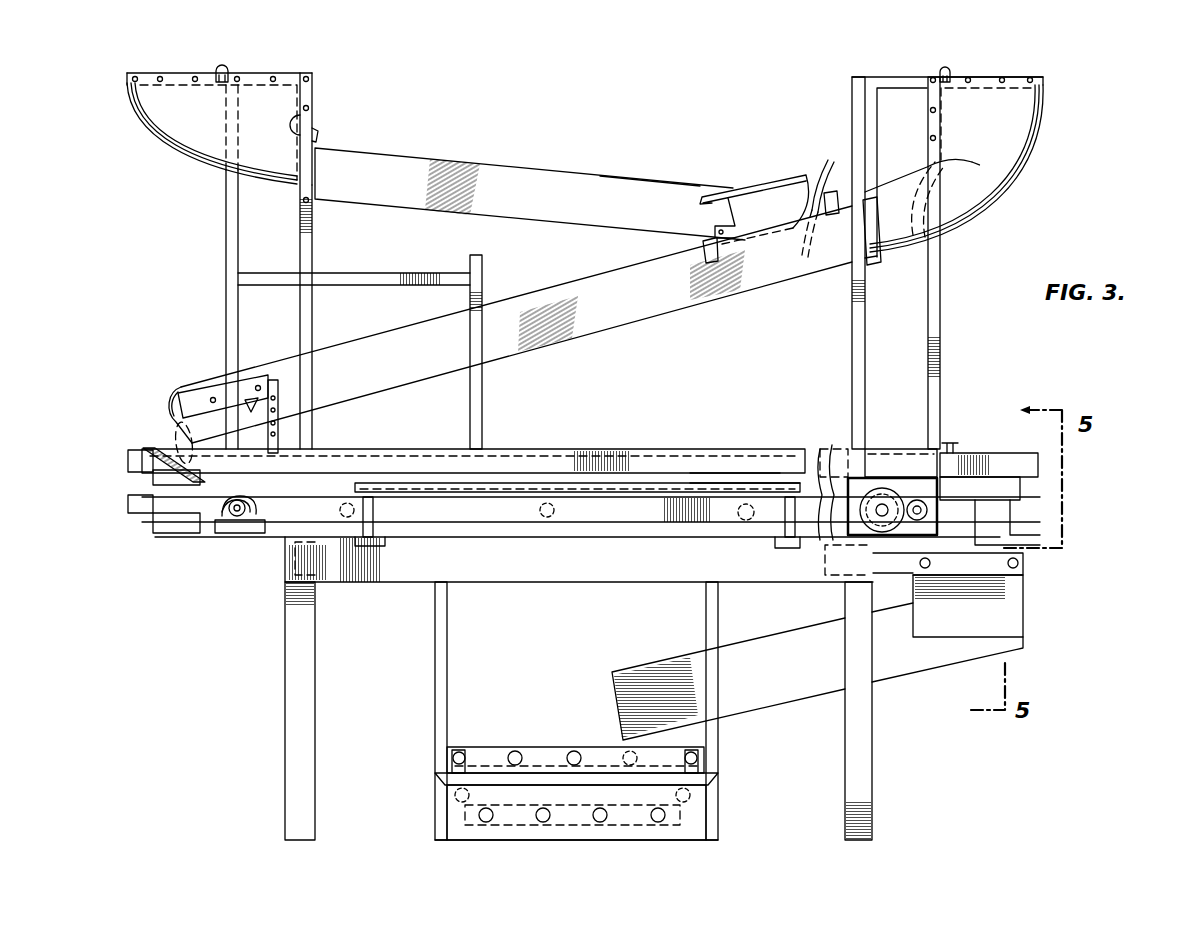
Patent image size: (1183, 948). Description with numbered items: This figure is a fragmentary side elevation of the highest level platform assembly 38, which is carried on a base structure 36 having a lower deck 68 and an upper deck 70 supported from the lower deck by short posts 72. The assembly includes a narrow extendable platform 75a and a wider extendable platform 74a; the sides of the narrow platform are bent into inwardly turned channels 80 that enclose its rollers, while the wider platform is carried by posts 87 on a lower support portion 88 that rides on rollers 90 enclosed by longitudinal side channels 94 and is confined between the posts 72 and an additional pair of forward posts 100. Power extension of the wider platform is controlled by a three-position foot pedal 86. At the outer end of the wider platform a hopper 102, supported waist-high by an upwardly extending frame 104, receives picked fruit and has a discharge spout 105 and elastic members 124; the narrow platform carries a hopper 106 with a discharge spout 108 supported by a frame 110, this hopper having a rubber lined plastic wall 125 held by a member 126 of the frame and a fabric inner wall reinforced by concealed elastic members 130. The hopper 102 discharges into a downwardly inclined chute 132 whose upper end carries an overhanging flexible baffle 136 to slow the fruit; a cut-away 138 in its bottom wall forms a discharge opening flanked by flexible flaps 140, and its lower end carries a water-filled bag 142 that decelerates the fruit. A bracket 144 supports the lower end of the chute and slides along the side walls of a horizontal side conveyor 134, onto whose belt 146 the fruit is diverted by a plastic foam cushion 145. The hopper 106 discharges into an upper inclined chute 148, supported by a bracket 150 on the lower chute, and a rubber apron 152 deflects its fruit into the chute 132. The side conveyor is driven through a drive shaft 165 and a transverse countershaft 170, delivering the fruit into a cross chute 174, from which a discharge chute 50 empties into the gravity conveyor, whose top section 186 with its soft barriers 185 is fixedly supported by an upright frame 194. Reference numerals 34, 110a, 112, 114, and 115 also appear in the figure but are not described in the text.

The legs 34 is at (293, 710).
The base structure 36 is at (536, 583).
The platform assembly 38 is at (680, 136).
The discharge chute 50 is at (817, 671).
The lower deck 68 is at (608, 578).
The upper deck 70 is at (757, 488).
The short posts 72 is at (372, 507).
The wider platform 74a is at (1032, 463).
The narrow platform 75a is at (710, 452).
The inwardly turned channels 80 is at (538, 463).
The three-position foot pedal 86 is at (955, 444).
The posts 87 is at (1030, 490).
The lower support portions 88 is at (828, 460).
The rollers 90 is at (548, 518).
The longitudinal side channels 94 is at (625, 512).
The forward posts 100 is at (990, 533).
The hopper 102 is at (1010, 108).
The upwardly extending frame 104 is at (935, 378).
The discharge spout 105 is at (893, 232).
The hopper 106 is at (178, 120).
The discharge spout 108 is at (318, 132).
The frame 110 is at (300, 228).
The cross brace post 110a is at (483, 292).
The bin lip 112 is at (1005, 158).
The rivet strip 114 is at (970, 77).
The top rail 115 is at (1018, 75).
The elastic members 124 is at (947, 70).
The rubber lined plastic wall 125 is at (201, 151).
The member 126 is at (262, 76).
The concealed elastic members 130 is at (224, 67).
The inclined chute 132 is at (660, 320).
The side conveyor 134 is at (268, 532).
The flexible baffle 136 is at (806, 214).
The cut away 138 is at (272, 398).
The flexible flaps 140 is at (210, 382).
The bag 142 is at (179, 430).
The bracket 144 is at (280, 436).
The plastic foam cushion 145 is at (128, 461).
The belt 146 is at (218, 513).
The inclined chute 148 is at (572, 166).
The bracket 150 is at (702, 243).
The rubber apron 152 is at (760, 205).
The drive shaft 165 is at (882, 504).
The transverse countershaft 170 is at (915, 520).
The cross chute 174 is at (1007, 606).
The barriers 185 is at (572, 750).
The top section 186 is at (699, 822).
The upright frame 194 is at (722, 784).